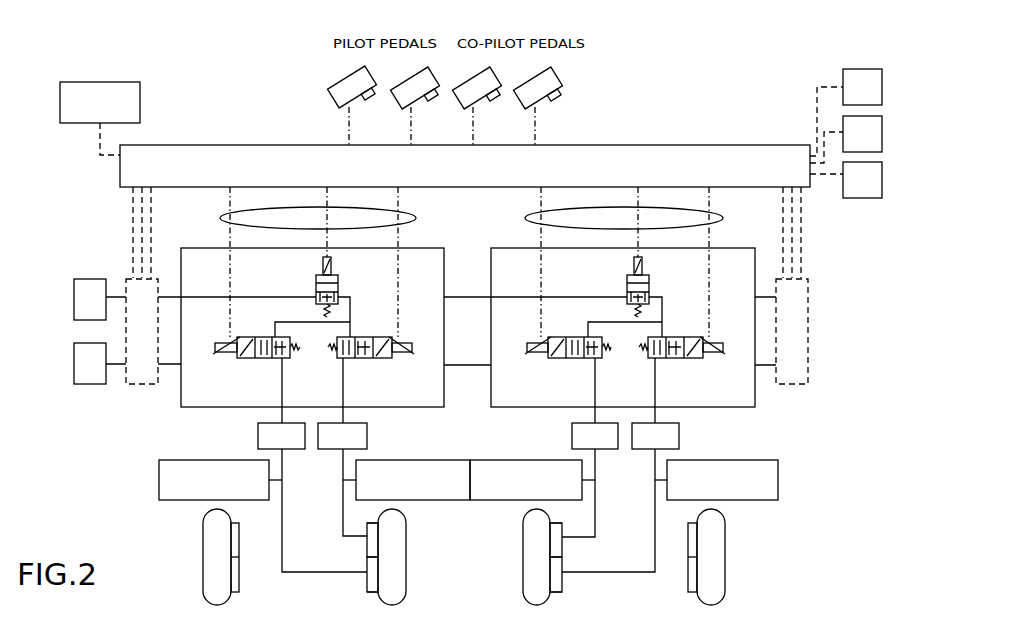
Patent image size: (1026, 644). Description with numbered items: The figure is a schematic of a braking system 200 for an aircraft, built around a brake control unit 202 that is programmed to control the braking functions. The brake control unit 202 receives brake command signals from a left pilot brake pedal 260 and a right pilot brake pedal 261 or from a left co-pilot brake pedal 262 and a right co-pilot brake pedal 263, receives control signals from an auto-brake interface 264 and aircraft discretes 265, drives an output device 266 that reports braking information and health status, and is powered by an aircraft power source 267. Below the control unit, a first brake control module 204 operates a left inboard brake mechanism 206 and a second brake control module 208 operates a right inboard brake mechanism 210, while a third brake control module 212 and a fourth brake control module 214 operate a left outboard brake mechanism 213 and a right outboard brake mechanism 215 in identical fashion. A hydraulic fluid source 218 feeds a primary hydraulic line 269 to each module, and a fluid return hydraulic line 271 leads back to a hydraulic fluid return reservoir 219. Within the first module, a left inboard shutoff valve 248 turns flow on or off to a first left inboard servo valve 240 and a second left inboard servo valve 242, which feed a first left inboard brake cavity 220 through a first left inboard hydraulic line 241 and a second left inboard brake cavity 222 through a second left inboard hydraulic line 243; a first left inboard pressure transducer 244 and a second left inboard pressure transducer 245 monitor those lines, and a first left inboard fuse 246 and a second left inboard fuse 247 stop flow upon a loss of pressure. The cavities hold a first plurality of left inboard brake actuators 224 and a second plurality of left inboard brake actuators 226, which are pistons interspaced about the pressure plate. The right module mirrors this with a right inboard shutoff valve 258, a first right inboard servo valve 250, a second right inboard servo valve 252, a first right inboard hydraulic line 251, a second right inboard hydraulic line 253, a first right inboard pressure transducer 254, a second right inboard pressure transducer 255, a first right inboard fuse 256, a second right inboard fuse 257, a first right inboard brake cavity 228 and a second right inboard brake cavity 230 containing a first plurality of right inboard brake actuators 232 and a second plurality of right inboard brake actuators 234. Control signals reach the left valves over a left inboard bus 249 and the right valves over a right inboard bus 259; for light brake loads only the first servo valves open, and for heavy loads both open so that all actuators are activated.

The braking system 200 is at (82, 49).
The brake control unit 202 is at (521, 179).
The first brake control module 204 is at (382, 407).
The left inboard brake mechanism 206 is at (357, 598).
The second brake control module 208 is at (720, 407).
The right inboard brake mechanism 210 is at (576, 593).
The third brake control module 212 is at (145, 387).
The left outboard brake mechanism 213 is at (240, 598).
The fourth brake control module 214 is at (808, 355).
The right outboard brake mechanism 215 is at (677, 581).
The hydraulic fluid source 218 is at (81, 278).
The hydraulic fluid return reservoir 219 is at (75, 384).
The first left inboard brake cavity 220 is at (367, 580).
The second left inboard brake cavity 222 is at (367, 548).
The first plurality of left inboard brake actuators 224 is at (369, 592).
The second plurality of left inboard brake actuators 226 is at (368, 525).
The first right inboard brake cavity 228 is at (562, 579).
The second right inboard brake cavity 230 is at (562, 544).
The first plurality of right inboard brake actuators 232 is at (561, 592).
The second plurality of right inboard brake actuators 234 is at (562, 527).
The first left inboard servo valve 240 is at (266, 360).
The first left inboard hydraulic line 241 is at (283, 521).
The second left inboard servo valve 242 is at (362, 360).
The second left inboard hydraulic line 243 is at (343, 463).
The first left inboard pressure transducer 244 is at (159, 481).
The second left inboard pressure transducer 245 is at (420, 500).
The first left inboard fuse 246 is at (258, 439).
The second left inboard fuse 247 is at (367, 434).
The left inboard shutoff valve 248 is at (338, 287).
The left inboard bus 249 is at (416, 216).
The first right inboard servo valve 250 is at (682, 360).
The first right inboard hydraulic line 251 is at (655, 482).
The second right inboard servo valve 252 is at (574, 360).
The second right inboard hydraulic line 253 is at (596, 488).
The first right inboard pressure transducer 254 is at (778, 484).
The second right inboard pressure transducer 255 is at (501, 500).
The first right inboard fuse 256 is at (679, 432).
The second right inboard fuse 257 is at (572, 433).
The right inboard shutoff valve 258 is at (649, 287).
The right inboard bus 259 is at (526, 214).
The left pilot brake pedal 260 is at (329, 86).
The right pilot brake pedal 261 is at (394, 93).
The left co-pilot brake pedal 262 is at (457, 93).
The right co-pilot brake pedal 263 is at (558, 78).
The auto-brake interface 264 is at (882, 86).
The aircraft discretes 265 is at (882, 135).
The output device 266 is at (882, 179).
The aircraft power source 267 is at (140, 100).
The primary hydraulic line 269 is at (118, 294).
The fluid return hydraulic line 271 is at (118, 366).